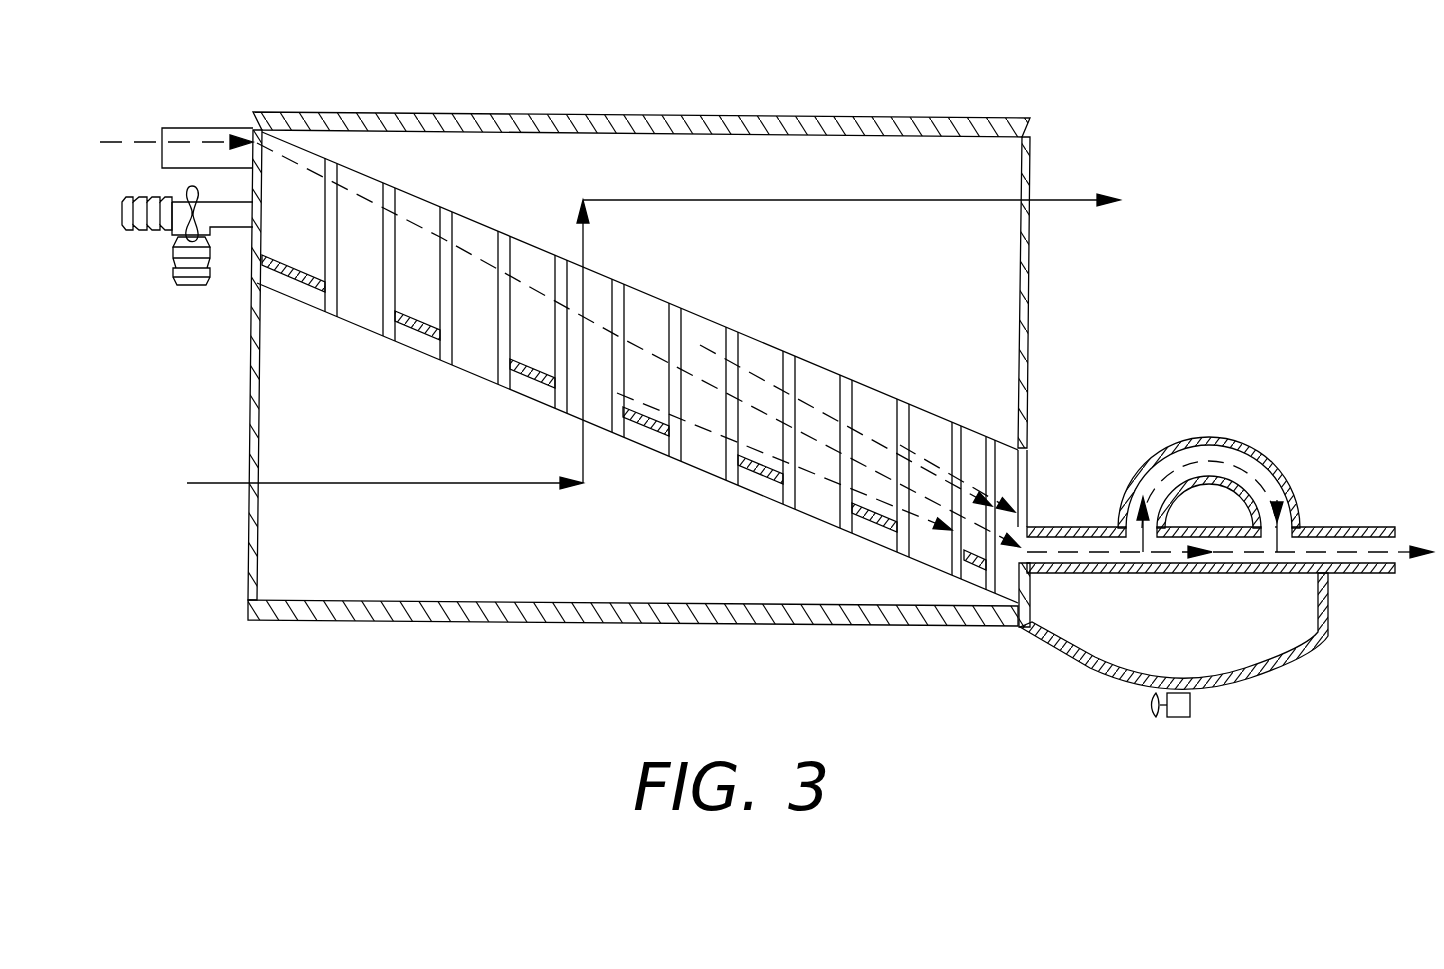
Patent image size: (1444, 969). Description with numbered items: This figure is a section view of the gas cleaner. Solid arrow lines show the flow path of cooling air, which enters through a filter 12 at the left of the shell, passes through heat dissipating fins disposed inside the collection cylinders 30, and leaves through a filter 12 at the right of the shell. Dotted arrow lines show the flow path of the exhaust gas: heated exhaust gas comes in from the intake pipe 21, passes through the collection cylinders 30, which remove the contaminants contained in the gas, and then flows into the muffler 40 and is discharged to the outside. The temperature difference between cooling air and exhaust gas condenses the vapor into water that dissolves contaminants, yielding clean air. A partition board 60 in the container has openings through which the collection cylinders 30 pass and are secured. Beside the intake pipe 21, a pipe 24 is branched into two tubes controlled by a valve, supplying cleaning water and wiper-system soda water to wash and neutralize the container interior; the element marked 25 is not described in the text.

The filter 12 is at (1031, 162).
The intake pipe 21 is at (167, 137).
The pipe 24 is at (140, 228).
The valve 25 is at (183, 193).
The collection cylinder 30 is at (412, 210).
The muffler 40 is at (1208, 405).
The partition board 60 is at (763, 470).